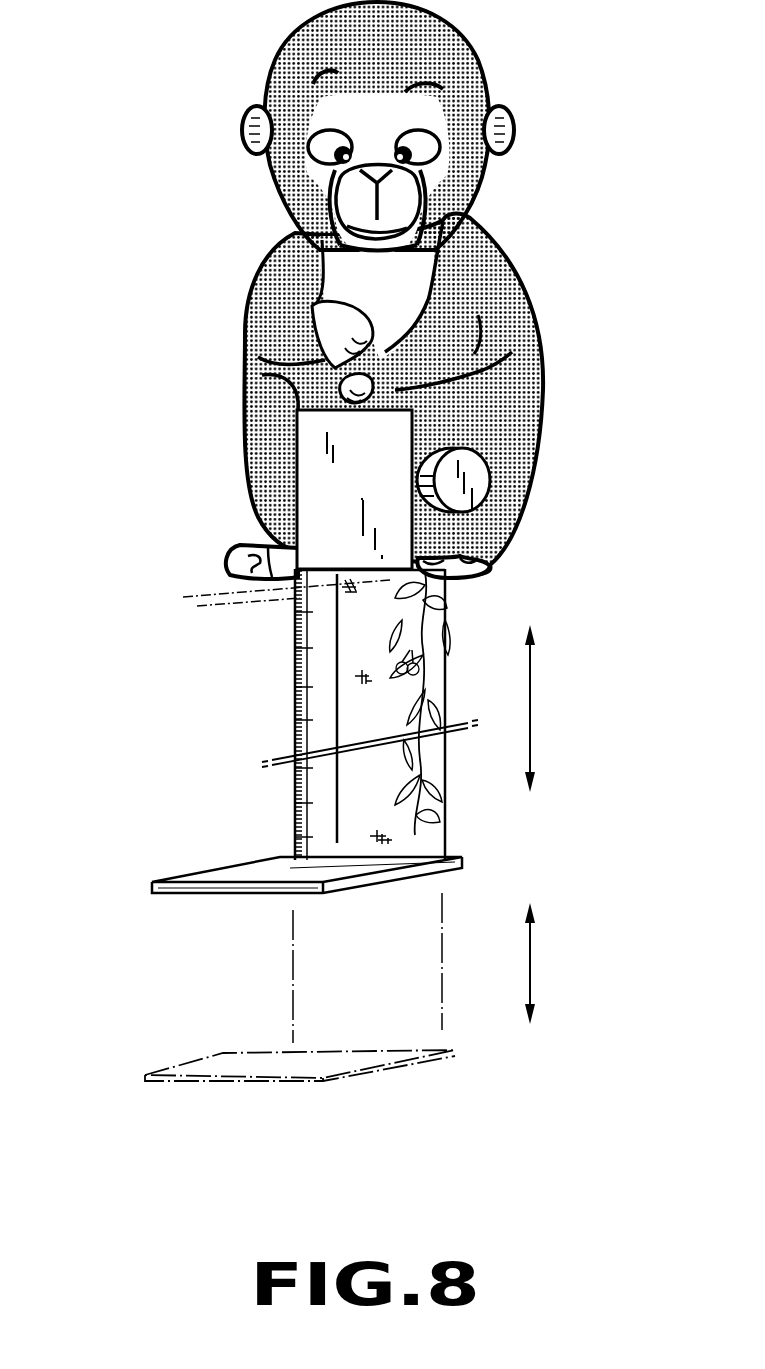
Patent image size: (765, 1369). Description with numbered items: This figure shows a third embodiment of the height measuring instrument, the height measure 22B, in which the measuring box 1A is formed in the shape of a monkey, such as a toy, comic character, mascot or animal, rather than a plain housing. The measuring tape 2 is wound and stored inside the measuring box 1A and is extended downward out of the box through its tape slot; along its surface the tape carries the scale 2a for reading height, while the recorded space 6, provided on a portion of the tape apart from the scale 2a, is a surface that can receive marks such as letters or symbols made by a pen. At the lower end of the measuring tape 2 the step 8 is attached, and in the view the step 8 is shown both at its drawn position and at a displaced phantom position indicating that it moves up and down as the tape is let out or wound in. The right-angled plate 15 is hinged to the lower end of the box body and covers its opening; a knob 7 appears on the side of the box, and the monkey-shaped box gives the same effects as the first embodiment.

The height measure 22B is at (205, 155).
The measuring box 1A is at (522, 283).
The right-angled plate 15 is at (300, 494).
The knob 7 is at (490, 487).
The measuring tape 2 is at (319, 714).
The scale 2a is at (293, 712).
The recorded space 6 is at (448, 754).
The step 8 is at (193, 878).